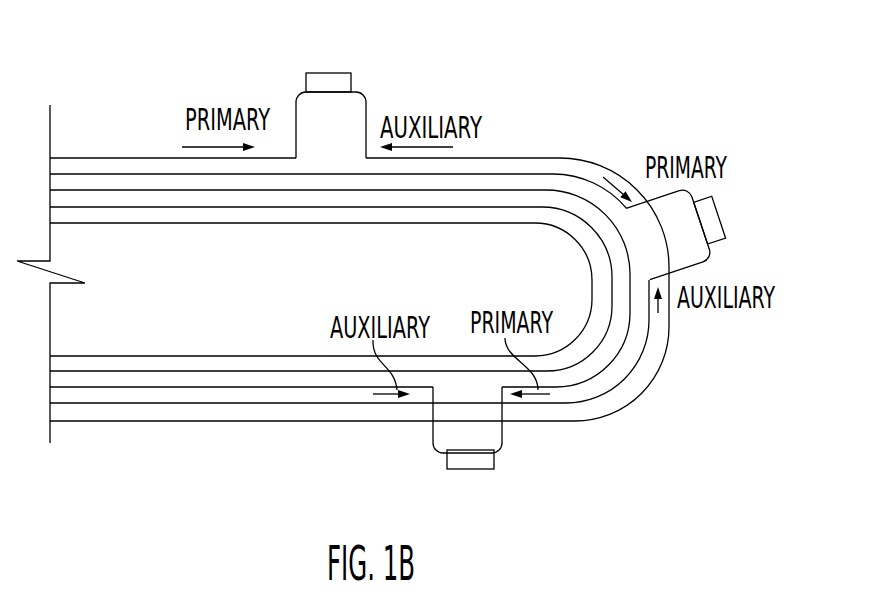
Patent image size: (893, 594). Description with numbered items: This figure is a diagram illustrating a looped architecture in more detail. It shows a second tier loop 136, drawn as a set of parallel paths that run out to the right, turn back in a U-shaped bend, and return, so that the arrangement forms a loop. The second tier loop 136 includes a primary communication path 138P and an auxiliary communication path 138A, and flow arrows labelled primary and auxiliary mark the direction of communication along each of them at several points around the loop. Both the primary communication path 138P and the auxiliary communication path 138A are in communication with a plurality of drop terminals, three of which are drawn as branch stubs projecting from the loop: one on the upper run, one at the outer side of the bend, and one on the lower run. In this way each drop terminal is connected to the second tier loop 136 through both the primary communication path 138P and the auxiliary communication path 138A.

The second tier loop 136 is at (587, 108).
The primary communication path 138P is at (103, 158).
The auxiliary communication path 138A is at (67, 422).